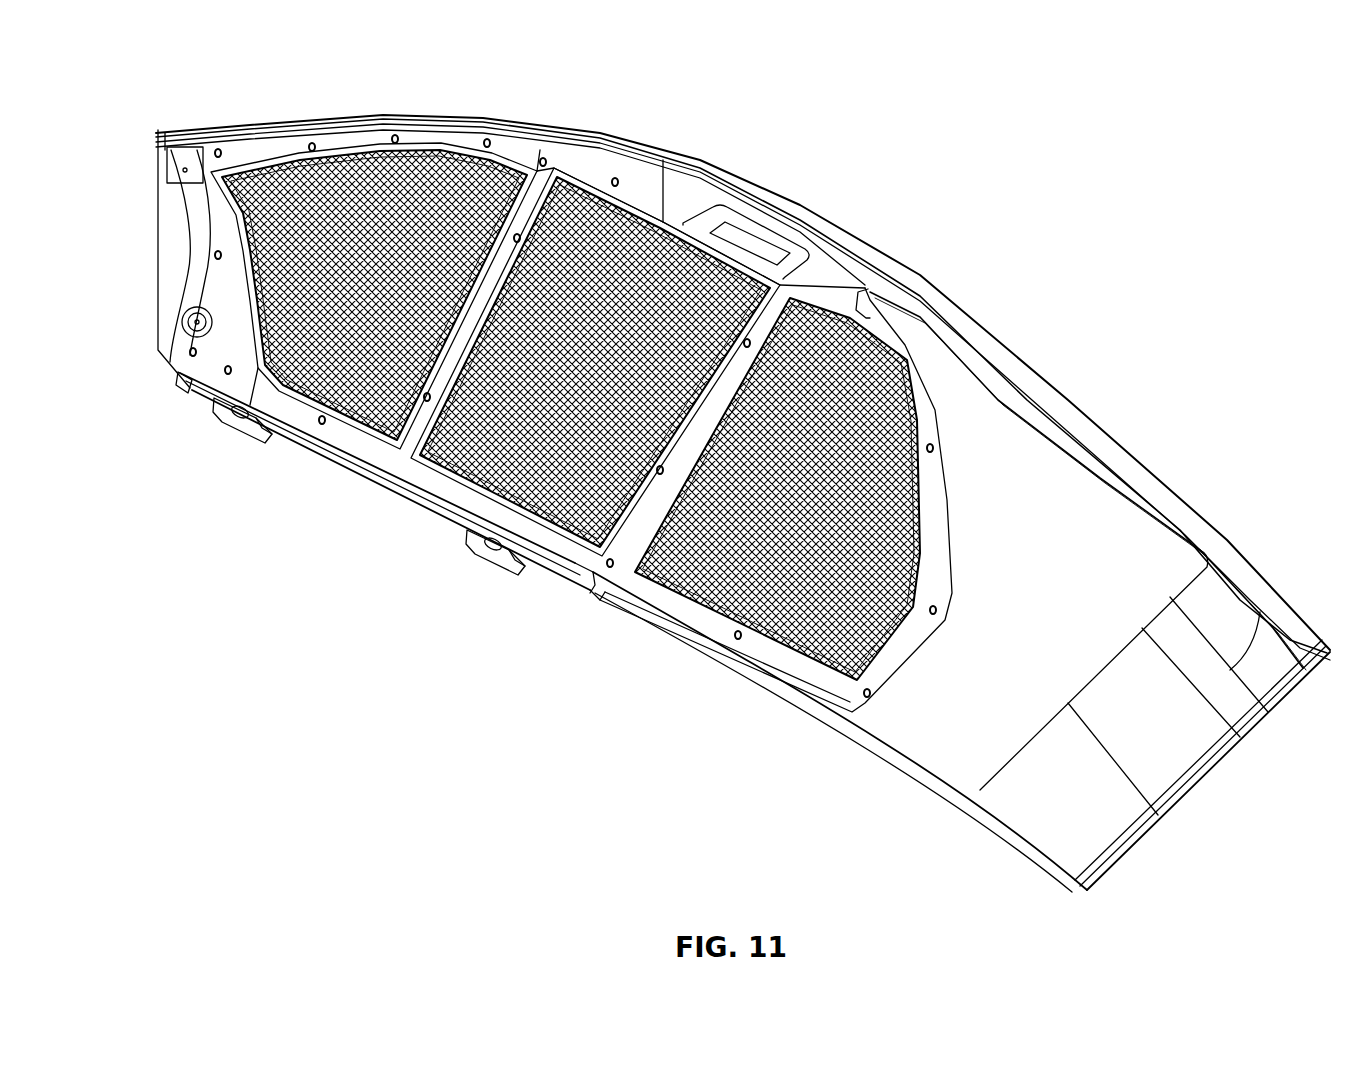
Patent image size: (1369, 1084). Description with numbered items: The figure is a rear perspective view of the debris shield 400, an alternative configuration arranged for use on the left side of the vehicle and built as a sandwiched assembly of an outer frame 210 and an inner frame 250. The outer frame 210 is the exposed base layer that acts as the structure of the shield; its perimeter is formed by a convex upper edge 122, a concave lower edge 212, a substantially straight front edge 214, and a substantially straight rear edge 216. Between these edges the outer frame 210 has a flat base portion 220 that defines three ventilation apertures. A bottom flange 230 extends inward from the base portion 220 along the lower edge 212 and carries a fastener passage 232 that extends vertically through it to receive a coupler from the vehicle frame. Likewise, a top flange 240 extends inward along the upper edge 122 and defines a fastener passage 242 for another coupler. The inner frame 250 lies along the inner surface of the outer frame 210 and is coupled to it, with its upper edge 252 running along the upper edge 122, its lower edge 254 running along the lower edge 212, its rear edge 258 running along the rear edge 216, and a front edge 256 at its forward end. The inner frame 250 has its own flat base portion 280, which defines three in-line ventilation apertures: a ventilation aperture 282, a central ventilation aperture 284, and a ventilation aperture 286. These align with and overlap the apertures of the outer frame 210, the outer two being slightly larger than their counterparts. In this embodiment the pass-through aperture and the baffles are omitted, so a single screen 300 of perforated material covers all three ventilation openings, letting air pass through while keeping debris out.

The debris shield 400 is at (1147, 123).
The upper edge 122 is at (995, 345).
The inner frame 250 is at (283, 145).
The upper edge 252 is at (408, 135).
The screen 300 is at (612, 248).
The fastener passage 232 is at (767, 232).
The bottom flange 230 is at (822, 252).
The front edge 256 is at (952, 530).
The rear edge 216 is at (158, 202).
The rear edge 258 is at (188, 257).
The ventilation aperture 286 is at (185, 385).
The fastener passage 242 is at (222, 425).
The lower edge 254 is at (363, 442).
The top flange 240 is at (413, 502).
The ventilation aperture 284 is at (610, 574).
The ventilation aperture 282 is at (750, 642).
The base portion 280 is at (893, 663).
The lower edge 212 is at (950, 803).
The front edge 214 is at (1140, 847).
The outer frame 210 is at (1170, 790).
The base portion 220 is at (1187, 730).